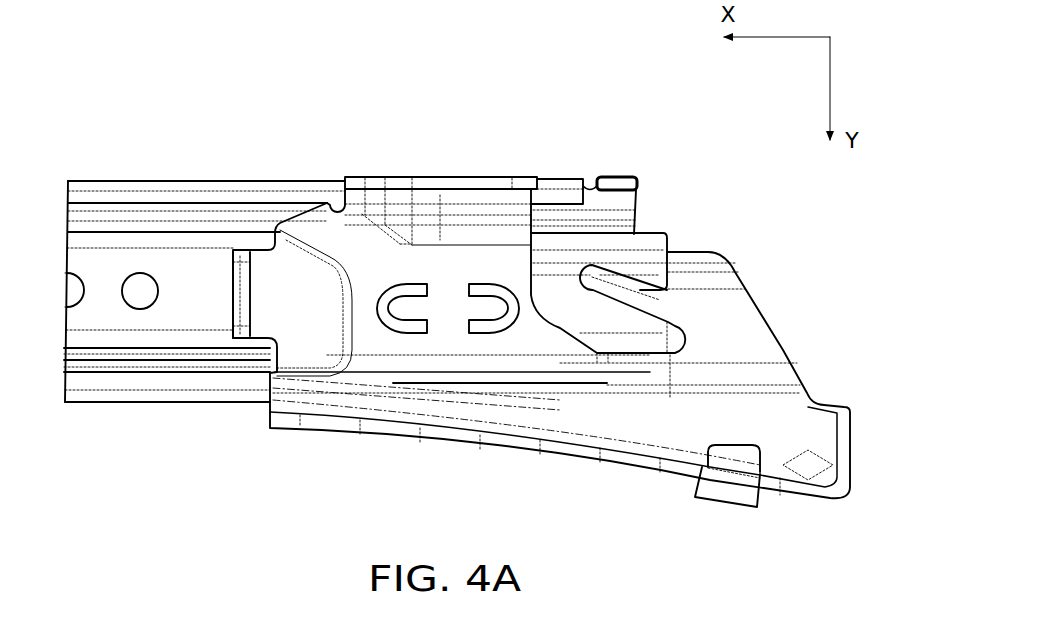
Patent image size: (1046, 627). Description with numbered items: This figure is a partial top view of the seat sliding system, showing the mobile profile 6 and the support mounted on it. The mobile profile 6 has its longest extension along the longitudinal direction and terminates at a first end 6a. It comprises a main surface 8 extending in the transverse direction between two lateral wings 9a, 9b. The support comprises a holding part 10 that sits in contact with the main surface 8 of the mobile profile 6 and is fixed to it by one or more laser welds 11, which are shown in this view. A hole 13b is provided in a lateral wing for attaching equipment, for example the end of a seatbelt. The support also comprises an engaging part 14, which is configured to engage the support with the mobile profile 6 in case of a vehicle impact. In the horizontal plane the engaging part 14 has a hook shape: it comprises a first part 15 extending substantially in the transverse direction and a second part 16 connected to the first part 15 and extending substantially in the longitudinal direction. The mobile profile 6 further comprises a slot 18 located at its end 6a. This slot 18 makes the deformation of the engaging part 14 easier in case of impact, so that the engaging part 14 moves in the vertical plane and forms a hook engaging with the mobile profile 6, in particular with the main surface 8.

The mobile profile 6 is at (124, 132).
The first end of the mobile profile 6a is at (728, 220).
The main surface 8 is at (190, 310).
The lateral wing 9a is at (222, 180).
The lateral wing 9b is at (112, 403).
The holding part 10 is at (447, 258).
The laser welds 11 is at (491, 334).
The hole 13b is at (735, 492).
The engaging part 14 is at (772, 277).
The first part 15 is at (738, 325).
The second part 16 is at (607, 277).
The slot 18 is at (641, 282).